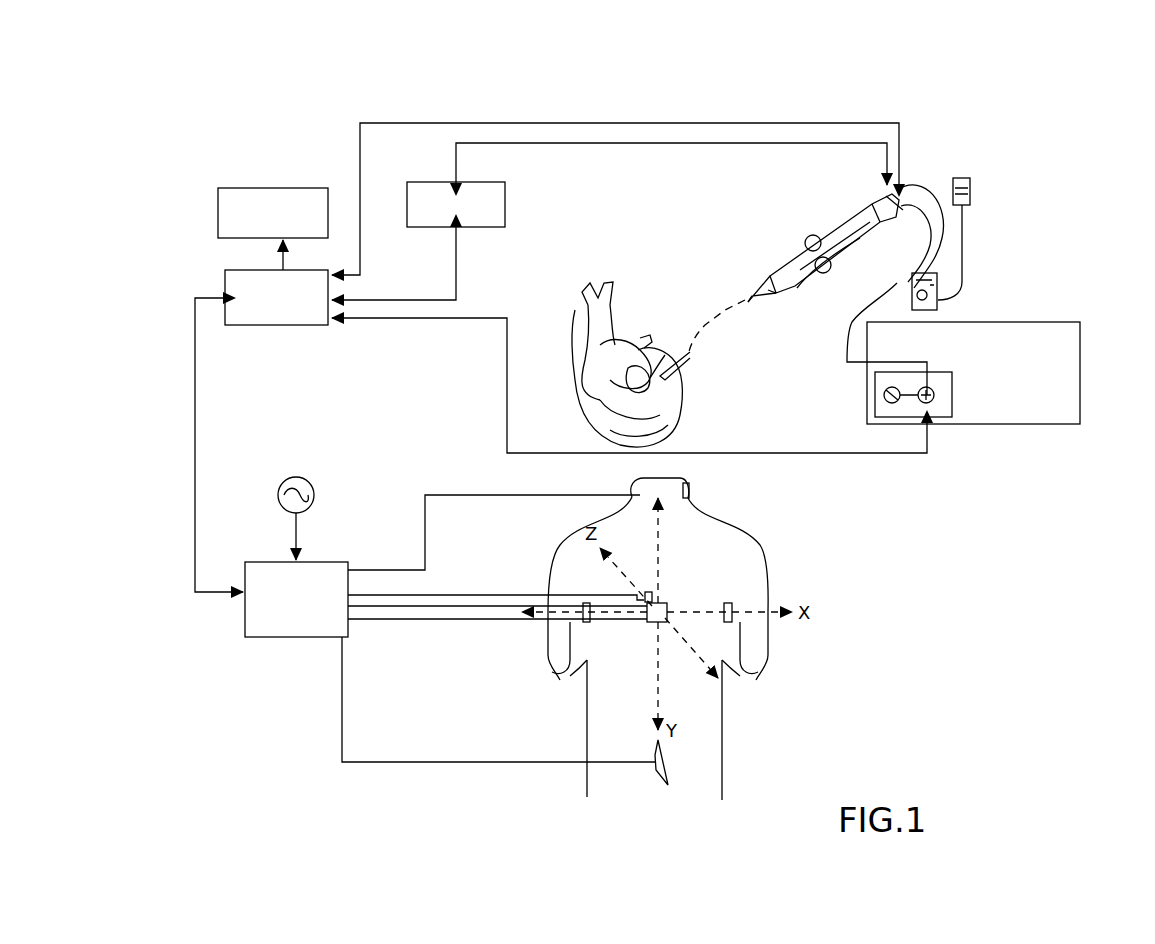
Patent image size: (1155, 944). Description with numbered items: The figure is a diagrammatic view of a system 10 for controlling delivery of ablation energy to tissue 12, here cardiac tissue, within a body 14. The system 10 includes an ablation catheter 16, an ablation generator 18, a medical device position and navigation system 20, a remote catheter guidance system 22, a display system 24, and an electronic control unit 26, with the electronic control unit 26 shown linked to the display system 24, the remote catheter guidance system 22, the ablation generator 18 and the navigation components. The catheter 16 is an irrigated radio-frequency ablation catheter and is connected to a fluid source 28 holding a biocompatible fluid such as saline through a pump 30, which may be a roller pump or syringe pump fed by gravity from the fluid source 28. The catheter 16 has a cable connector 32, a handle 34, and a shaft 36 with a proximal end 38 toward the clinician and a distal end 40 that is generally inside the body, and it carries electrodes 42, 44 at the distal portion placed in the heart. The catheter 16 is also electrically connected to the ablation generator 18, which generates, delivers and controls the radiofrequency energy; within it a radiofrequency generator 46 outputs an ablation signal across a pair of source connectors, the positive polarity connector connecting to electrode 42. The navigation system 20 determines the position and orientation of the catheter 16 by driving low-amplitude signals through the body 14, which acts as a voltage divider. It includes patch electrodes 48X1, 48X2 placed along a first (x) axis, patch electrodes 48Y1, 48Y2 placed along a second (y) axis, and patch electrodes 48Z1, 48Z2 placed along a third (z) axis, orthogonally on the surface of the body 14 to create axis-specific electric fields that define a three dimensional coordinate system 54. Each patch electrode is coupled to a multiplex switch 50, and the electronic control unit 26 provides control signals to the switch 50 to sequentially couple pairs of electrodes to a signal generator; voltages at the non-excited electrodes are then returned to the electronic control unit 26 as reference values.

The system 10 is at (343, 118).
The tissue 12 is at (672, 424).
The body 14 is at (724, 742).
The ablation catheter 16 is at (818, 221).
The ablation generator 18 is at (1080, 408).
The medical device position and navigation system 20 is at (300, 702).
The remote catheter guidance system 22 is at (420, 196).
The display system 24 is at (232, 195).
The electronic control unit 26 is at (232, 284).
The fluid source 28 is at (970, 198).
The pump 30 is at (940, 272).
The cable connector 32 is at (893, 216).
The handle 34 is at (847, 224).
The shaft 36 is at (744, 296).
The proximal end 38 is at (762, 300).
The distal end 40 is at (702, 378).
The electrode 42 is at (652, 340).
The electrode 44 is at (668, 358).
The radiofrequency generator 46 is at (950, 404).
The patch electrode 48Y1 is at (689, 490).
The patch electrode 48Y2 is at (655, 762).
The patch electrode 48X1 is at (585, 624).
The patch electrode 48X2 is at (728, 624).
The patch electrode 48Z1 is at (664, 602).
The patch electrode 48Z2 is at (642, 591).
The multiplex switch 50 is at (262, 637).
The three dimensional coordinate system 54 is at (278, 490).